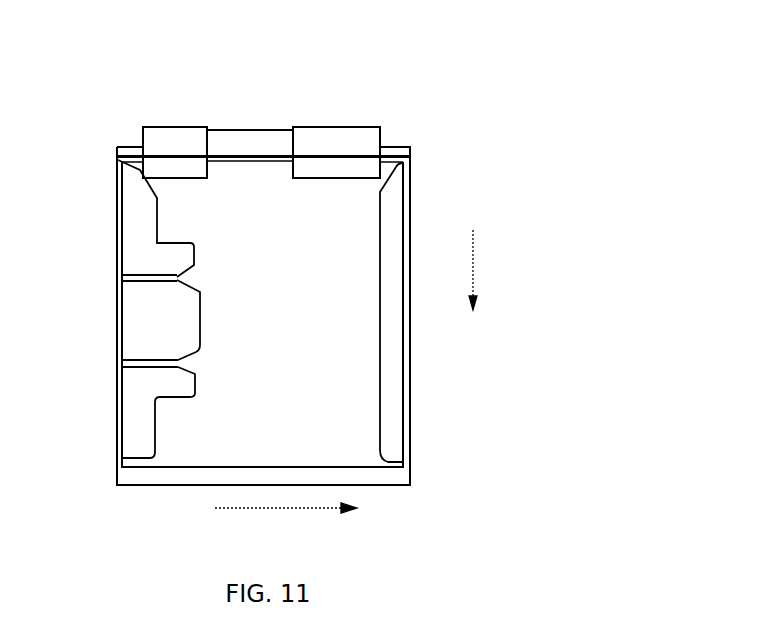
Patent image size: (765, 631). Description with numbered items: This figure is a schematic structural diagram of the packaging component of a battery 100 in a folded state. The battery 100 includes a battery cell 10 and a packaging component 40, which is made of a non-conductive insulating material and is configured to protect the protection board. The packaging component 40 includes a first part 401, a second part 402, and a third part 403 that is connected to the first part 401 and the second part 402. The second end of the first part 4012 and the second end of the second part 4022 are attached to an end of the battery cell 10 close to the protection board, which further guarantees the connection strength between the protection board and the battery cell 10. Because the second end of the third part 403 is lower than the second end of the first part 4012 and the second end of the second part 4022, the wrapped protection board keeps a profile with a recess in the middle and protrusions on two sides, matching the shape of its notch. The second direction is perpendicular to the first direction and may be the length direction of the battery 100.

The battery 100 is at (98, 98).
The battery cell 10 is at (347, 352).
The packaging component 40 is at (195, 50).
The first part 401 is at (188, 130).
The second end of the first part 4012 is at (190, 178).
The second part 402 is at (328, 133).
The second end of the second part 4022 is at (312, 178).
The third part 403 is at (257, 140).